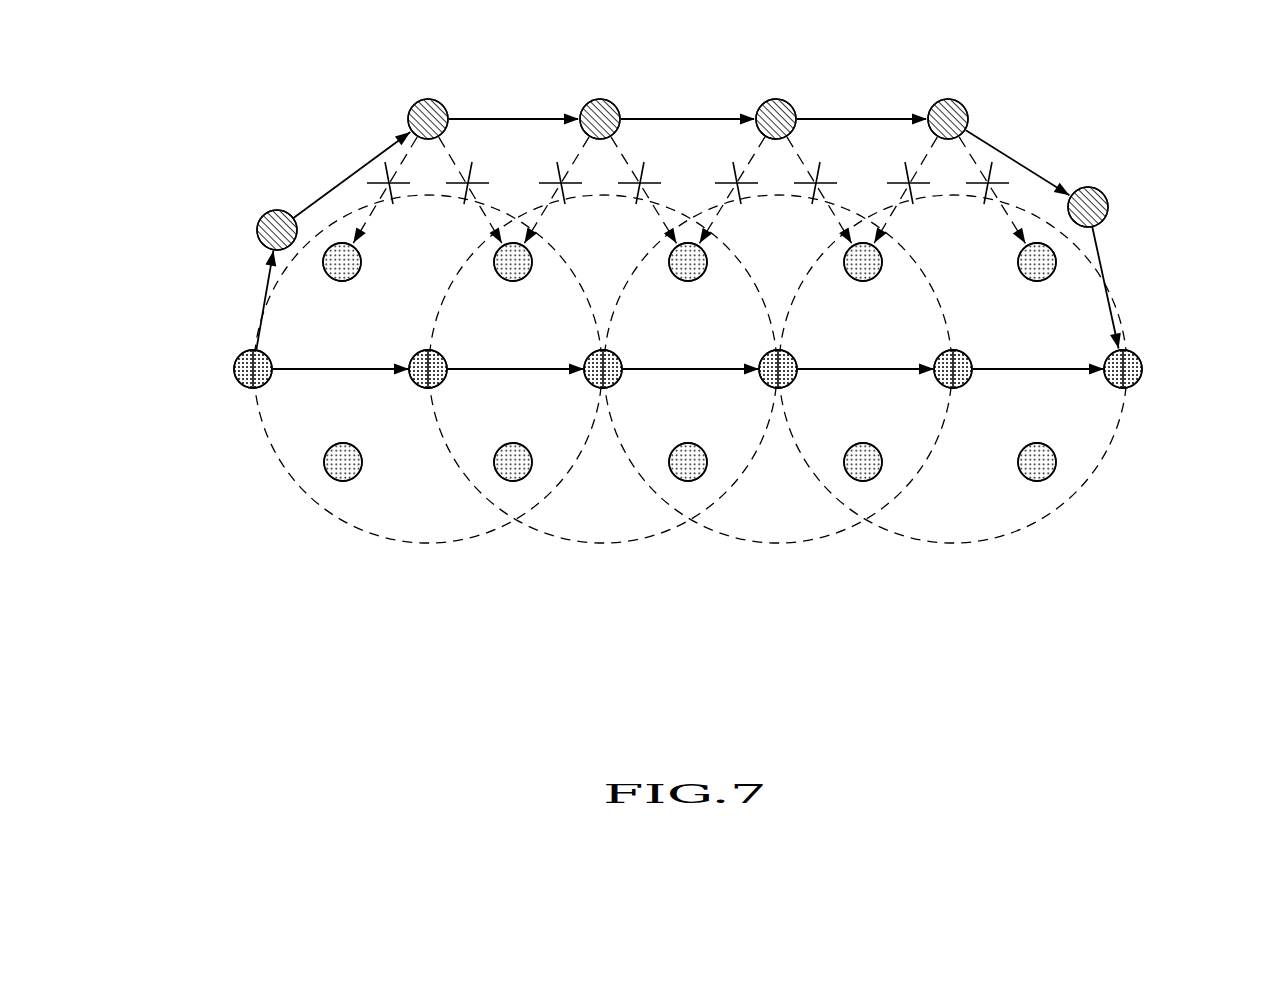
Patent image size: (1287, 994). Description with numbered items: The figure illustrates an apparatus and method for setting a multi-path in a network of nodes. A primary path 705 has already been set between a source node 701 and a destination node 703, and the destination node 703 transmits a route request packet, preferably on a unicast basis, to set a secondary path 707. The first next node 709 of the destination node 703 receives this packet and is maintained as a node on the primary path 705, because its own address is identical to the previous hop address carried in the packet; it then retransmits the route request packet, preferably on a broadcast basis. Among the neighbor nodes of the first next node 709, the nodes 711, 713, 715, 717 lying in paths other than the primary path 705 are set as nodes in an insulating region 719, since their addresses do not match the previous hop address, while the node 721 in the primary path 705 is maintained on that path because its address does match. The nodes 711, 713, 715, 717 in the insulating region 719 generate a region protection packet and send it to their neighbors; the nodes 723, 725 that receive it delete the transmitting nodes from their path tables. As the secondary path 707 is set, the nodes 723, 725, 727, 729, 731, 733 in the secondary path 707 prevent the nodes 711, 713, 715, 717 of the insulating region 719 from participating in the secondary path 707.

The source node 701 is at (1143, 369).
The destination node 703 is at (234, 371).
The primary path 705 is at (464, 371).
The secondary path 707 is at (686, 116).
The first next node 709 is at (429, 349).
The node in a path other than the primary path 711 is at (342, 282).
The node in a path other than the primary path 713 is at (513, 282).
The node in a path other than the primary path 715 is at (343, 442).
The node in a path other than the primary path 717 is at (511, 442).
The insulating region 719 is at (769, 545).
The node in the primary path 721 is at (613, 357).
The node in the secondary path 723 is at (278, 210).
The node in the secondary path 725 is at (428, 98).
The node in the secondary path 727 is at (601, 98).
The node in the secondary path 729 is at (776, 98).
The node in the secondary path 731 is at (948, 98).
The node in the secondary path 733 is at (1089, 187).